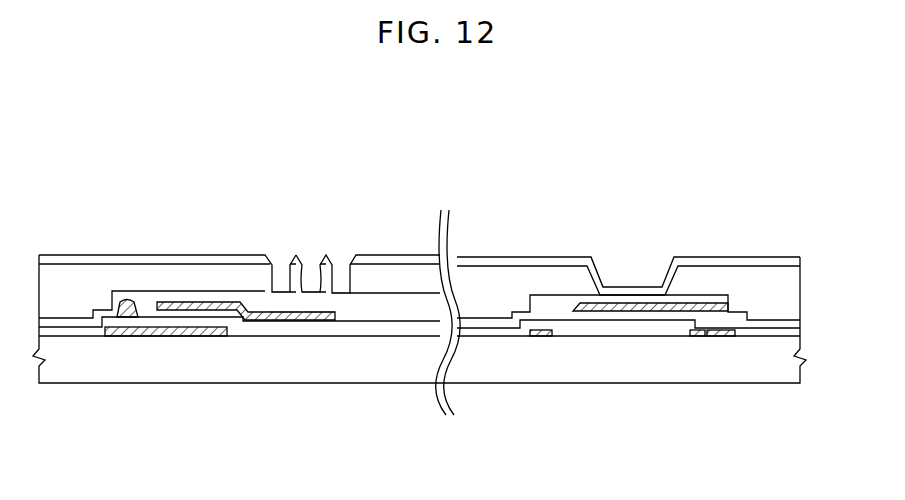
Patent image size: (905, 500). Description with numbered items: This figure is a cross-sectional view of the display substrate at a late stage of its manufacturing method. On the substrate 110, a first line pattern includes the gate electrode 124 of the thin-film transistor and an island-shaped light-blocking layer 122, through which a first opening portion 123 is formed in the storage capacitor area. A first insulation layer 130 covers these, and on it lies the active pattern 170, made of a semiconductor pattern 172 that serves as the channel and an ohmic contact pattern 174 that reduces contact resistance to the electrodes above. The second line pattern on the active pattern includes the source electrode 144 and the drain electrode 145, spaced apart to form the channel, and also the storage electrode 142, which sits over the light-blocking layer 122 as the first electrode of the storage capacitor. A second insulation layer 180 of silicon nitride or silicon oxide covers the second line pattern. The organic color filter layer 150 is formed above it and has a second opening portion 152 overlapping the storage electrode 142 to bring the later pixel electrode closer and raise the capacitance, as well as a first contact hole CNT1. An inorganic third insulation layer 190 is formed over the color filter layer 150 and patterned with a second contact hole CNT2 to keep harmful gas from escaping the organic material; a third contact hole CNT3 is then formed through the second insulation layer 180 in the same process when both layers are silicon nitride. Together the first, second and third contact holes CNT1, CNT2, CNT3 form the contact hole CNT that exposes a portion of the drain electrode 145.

The substrate 110 is at (646, 365).
The light-blocking layer 122 is at (541, 337).
The first opening portion 123 is at (695, 338).
The gate electrode 124 is at (178, 334).
The first insulation layer 130 is at (63, 331).
The storage electrode 142 is at (604, 313).
The source electrode 144 is at (130, 306).
The drain electrode 145 is at (214, 308).
The color filter layer 150 is at (497, 302).
The second opening portion 152 is at (602, 278).
The active pattern 170 is at (300, 387).
The semiconductor pattern 172 is at (282, 304).
The ohmic contact pattern 174 is at (323, 316).
The second insulation layer 180 is at (89, 321).
The third insulation layer 190 is at (396, 266).
The contact hole CNT is at (387, 203).
The first contact hole CNT1 is at (255, 262).
The second contact hole CNT2 is at (300, 298).
The third contact hole CNT3 is at (320, 298).